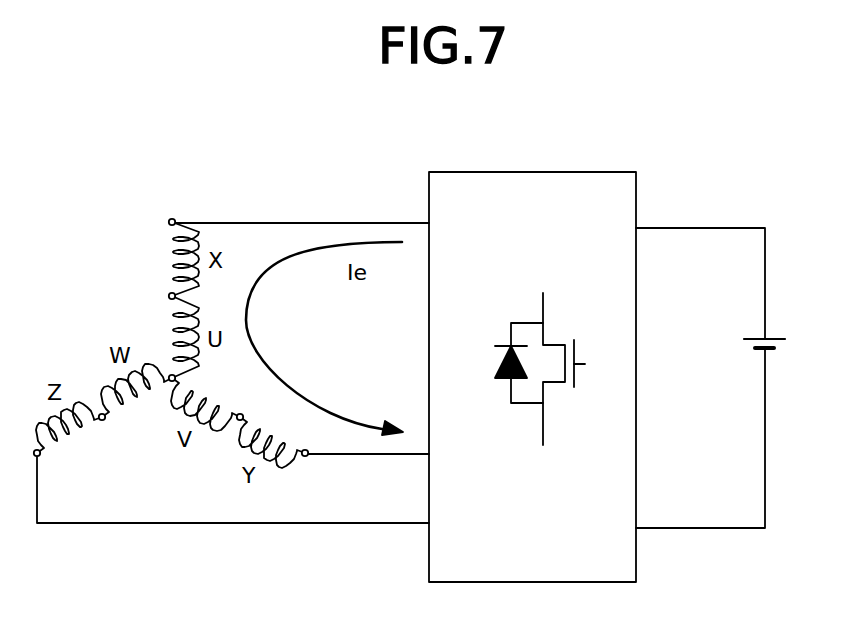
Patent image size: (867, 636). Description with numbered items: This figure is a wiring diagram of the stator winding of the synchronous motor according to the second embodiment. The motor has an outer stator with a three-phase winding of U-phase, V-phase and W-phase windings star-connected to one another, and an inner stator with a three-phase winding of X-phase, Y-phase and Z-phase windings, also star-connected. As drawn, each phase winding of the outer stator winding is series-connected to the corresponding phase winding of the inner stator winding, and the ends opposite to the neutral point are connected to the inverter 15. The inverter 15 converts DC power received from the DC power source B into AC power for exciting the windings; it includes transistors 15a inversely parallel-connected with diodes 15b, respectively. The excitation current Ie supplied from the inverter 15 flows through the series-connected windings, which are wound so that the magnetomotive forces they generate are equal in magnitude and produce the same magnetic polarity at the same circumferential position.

The inverter 15 is at (553, 172).
The transistor 15a is at (568, 341).
The diode 15b is at (500, 370).
The DC power source B is at (795, 323).